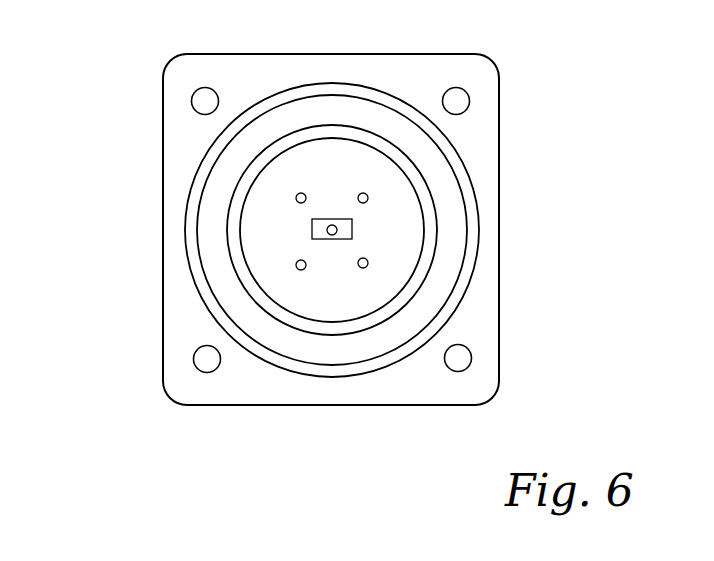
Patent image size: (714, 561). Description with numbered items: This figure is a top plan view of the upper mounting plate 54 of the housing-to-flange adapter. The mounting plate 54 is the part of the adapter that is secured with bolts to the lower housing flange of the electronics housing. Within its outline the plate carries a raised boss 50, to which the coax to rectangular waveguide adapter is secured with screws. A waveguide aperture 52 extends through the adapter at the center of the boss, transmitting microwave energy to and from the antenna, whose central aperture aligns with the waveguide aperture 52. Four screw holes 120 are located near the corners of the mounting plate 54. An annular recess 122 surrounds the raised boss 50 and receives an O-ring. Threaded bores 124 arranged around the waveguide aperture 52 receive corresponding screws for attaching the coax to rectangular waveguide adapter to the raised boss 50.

The raised boss 50 is at (337, 156).
The waveguide aperture 52 is at (312, 232).
The mounting plate 54 is at (155, 207).
The screw holes 120 is at (191, 99).
The annular recess 122 is at (470, 177).
The threaded bores 124 is at (296, 197).